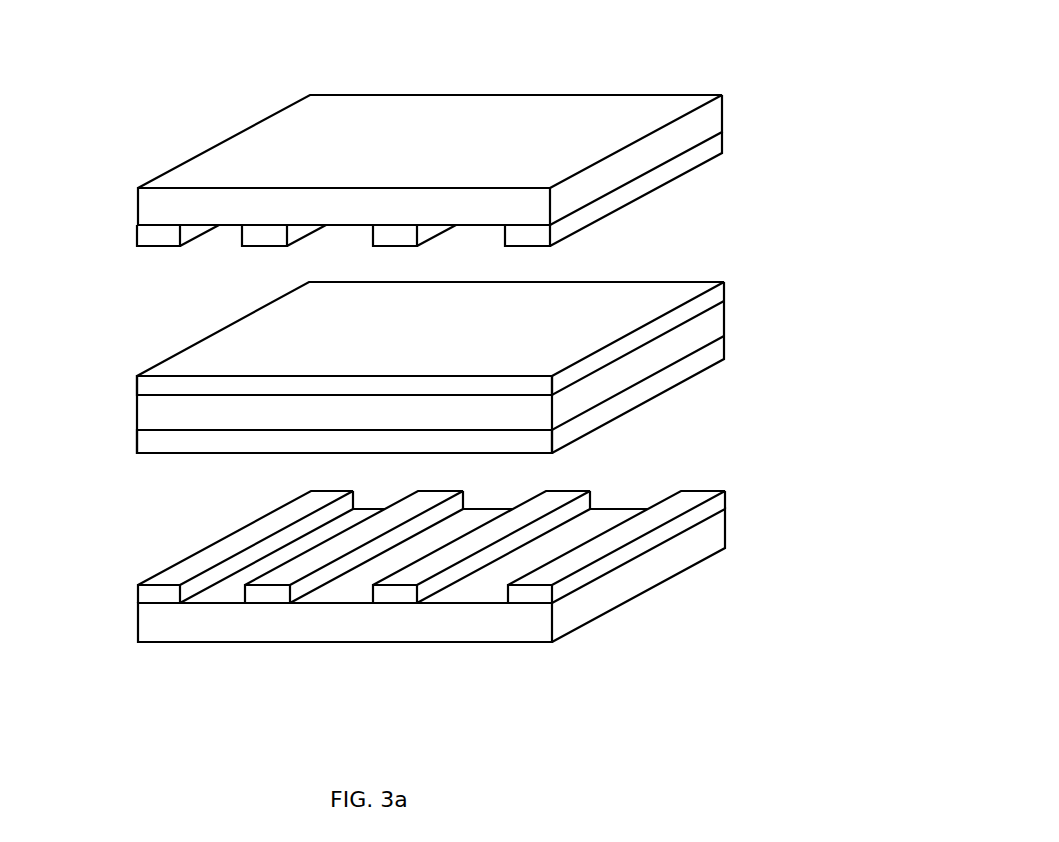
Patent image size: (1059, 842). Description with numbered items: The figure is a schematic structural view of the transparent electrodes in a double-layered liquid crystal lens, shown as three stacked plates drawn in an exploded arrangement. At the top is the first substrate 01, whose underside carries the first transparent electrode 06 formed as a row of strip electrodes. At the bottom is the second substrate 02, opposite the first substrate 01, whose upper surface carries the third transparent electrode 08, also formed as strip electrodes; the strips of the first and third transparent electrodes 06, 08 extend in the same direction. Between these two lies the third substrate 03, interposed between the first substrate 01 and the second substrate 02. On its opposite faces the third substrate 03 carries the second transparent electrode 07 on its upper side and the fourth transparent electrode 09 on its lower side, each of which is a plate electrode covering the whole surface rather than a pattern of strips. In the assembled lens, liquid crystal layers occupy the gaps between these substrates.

The first substrate 01 is at (720, 117).
The first transparent electrode 06 is at (137, 225).
The third substrate 03 is at (723, 312).
The second transparent electrode 07 is at (148, 383).
The fourth transparent electrode 09 is at (148, 443).
The second substrate 02 is at (637, 575).
The third transparent electrode 08 is at (148, 593).